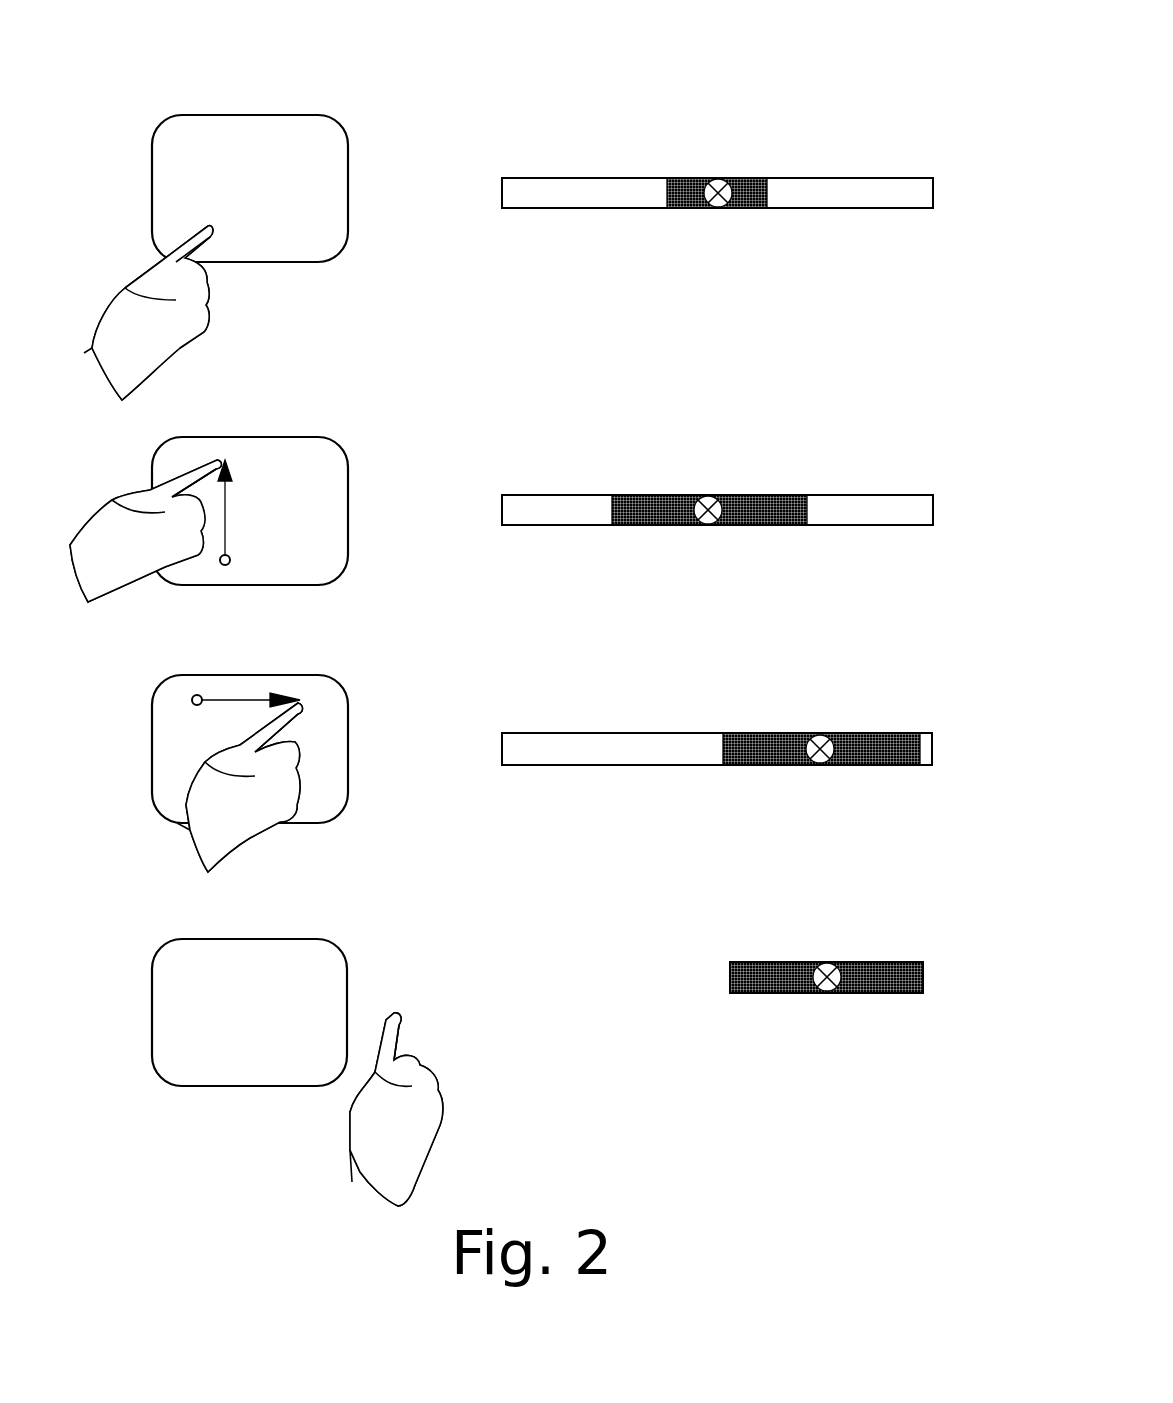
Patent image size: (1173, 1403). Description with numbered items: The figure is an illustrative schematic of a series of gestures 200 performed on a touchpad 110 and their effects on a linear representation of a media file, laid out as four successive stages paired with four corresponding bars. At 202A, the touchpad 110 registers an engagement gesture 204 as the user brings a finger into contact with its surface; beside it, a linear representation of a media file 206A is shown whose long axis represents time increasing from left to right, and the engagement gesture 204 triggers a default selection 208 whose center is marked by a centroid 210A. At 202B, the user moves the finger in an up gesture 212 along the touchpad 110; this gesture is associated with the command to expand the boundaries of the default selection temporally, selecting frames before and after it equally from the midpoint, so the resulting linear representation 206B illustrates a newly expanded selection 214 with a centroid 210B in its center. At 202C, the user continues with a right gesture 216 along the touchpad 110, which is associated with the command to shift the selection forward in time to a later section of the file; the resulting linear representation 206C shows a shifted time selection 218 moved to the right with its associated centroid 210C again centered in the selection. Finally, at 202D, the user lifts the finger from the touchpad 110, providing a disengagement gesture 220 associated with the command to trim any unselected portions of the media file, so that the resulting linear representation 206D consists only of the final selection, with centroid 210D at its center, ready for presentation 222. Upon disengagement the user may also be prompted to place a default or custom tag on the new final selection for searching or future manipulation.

The series of gestures 200 is at (800, 65).
The touchpad 110 is at (300, 577).
The engagement stage 202A is at (250, 173).
The up gesture stage 202B is at (250, 497).
The right gesture stage 202C is at (250, 735).
The disengagement stage 202D is at (249, 997).
The engagement gesture 204 is at (237, 308).
The linear representation of a media file 206A is at (717, 233).
The resulting linear representation 206B is at (717, 522).
The resulting linear representation 206C is at (733, 752).
The resulting linear representation 206D is at (854, 1017).
The default selection 208 is at (707, 208).
The centroid 210A is at (718, 180).
The centroid 210B is at (708, 496).
The centroid 210C is at (820, 734).
The centroid 210D is at (828, 962).
The up gesture 212 is at (253, 547).
The expanded selection 214 is at (672, 526).
The right gesture 216 is at (307, 800).
The shifted time selection 218 is at (773, 766).
The disengagement gesture 220 is at (436, 1140).
The presentation 222 is at (765, 993).